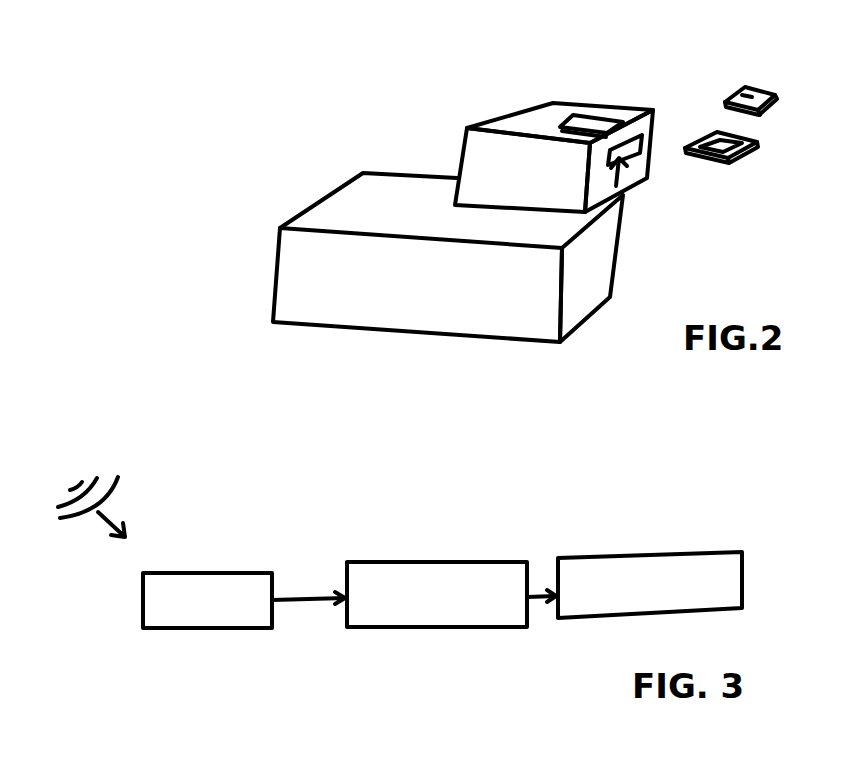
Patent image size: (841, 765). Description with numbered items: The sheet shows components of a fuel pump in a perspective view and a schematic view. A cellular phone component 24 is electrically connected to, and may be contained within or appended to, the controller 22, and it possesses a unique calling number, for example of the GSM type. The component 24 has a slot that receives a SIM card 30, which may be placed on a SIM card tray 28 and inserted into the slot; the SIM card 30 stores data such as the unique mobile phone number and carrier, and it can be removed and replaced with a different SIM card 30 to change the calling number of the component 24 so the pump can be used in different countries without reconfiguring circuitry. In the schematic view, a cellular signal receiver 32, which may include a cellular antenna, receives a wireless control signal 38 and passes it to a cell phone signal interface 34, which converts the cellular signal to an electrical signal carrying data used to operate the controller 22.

In FIG. 2, the controller 22 is at (380, 313).
In FIG. 3, the controller 22 is at (655, 570).
In FIG. 2, the cellular phone component 24 is at (530, 120).
In FIG. 2, the SIM card tray 28 is at (723, 158).
In FIG. 2, the SIM card 30 is at (752, 92).
In FIG. 2, the cellular signal receiver 32 is at (585, 122).
In FIG. 3, the cellular signal receiver 32 is at (216, 587).
In FIG. 3, the cell phone signal interface 34 is at (441, 581).
In FIG. 3, the control signal 38 is at (68, 462).